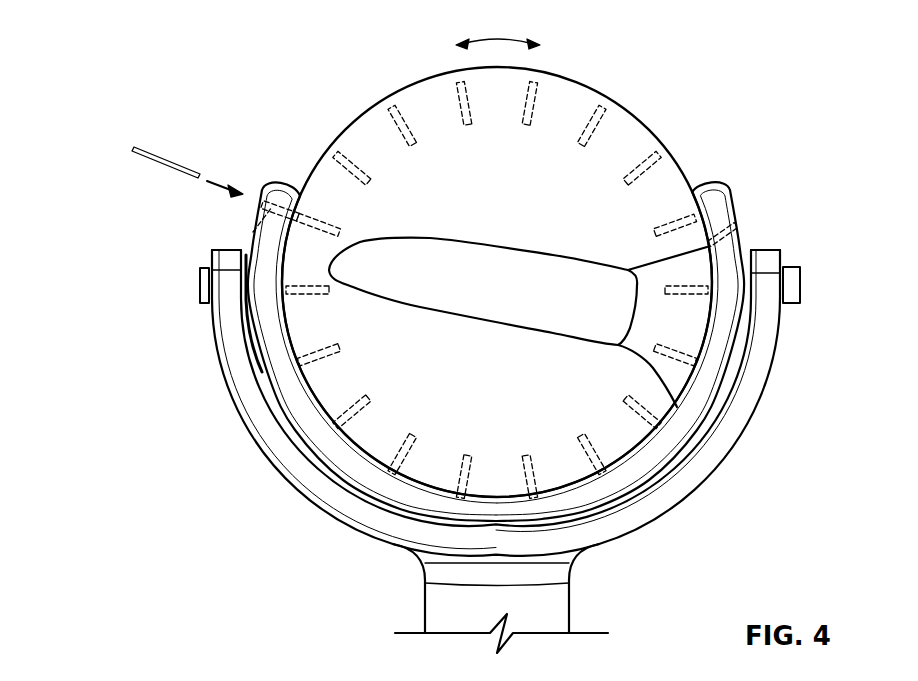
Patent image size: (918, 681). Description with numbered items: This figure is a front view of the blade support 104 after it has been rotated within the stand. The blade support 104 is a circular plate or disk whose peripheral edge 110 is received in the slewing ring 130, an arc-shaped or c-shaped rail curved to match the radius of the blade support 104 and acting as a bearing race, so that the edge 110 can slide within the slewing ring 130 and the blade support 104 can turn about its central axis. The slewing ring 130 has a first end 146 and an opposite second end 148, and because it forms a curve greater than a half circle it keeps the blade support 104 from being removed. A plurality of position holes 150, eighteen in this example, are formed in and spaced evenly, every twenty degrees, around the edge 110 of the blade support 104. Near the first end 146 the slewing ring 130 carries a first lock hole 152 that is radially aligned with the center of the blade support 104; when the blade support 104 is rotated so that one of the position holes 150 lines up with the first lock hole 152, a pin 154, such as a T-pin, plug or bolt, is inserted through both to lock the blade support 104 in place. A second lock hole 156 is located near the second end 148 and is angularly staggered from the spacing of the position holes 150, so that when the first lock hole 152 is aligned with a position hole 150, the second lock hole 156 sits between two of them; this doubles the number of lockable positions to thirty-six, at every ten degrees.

The blade support 104 is at (666, 184).
The peripheral edge 110 is at (628, 114).
The slewing ring 130 is at (228, 340).
The first end 146 is at (272, 186).
The second end 148 is at (713, 186).
The position holes 150 is at (327, 226).
The first lock hole 152 is at (262, 222).
The pin 154 is at (132, 152).
The second lock hole 156 is at (744, 204).